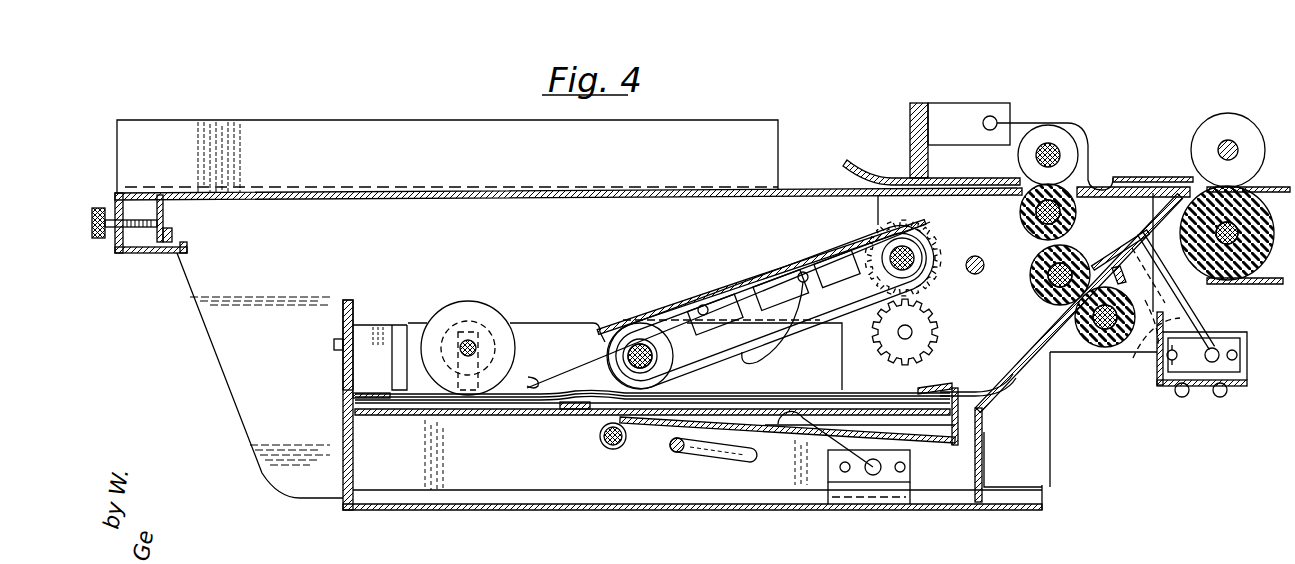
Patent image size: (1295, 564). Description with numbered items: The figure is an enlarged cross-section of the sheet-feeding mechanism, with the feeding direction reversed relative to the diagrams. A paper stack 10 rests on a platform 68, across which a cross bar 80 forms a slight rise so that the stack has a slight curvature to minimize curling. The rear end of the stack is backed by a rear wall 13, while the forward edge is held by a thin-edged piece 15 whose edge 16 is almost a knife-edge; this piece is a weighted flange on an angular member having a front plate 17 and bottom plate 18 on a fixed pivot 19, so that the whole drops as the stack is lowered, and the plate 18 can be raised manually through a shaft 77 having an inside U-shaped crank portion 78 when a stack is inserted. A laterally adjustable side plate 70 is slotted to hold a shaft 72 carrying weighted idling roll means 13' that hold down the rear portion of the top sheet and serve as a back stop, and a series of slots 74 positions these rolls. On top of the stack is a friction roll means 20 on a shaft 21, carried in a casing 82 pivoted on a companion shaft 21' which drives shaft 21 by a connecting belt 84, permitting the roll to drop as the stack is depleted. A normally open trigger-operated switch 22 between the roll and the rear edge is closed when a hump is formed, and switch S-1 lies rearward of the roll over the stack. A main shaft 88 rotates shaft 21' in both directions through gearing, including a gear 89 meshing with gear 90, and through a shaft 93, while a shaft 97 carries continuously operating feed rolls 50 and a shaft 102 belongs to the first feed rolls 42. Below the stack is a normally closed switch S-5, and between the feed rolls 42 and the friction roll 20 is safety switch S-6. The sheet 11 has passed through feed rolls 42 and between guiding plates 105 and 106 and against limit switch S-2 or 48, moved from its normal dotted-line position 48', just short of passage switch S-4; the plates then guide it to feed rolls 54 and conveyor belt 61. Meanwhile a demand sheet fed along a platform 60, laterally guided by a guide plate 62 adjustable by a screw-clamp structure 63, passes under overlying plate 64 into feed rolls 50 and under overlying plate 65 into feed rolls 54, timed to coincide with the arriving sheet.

The paper stack 10 is at (768, 396).
The sheet 11 is at (978, 384).
The rear wall 13 is at (321, 405).
The weighted idling roll means 13' is at (483, 340).
The thin-edged piece 15 is at (940, 387).
The edge 16 is at (920, 390).
The front plate 17 is at (952, 425).
The bottom plate 18 is at (946, 445).
The fixed pivot 19 is at (610, 448).
The friction roll means 20 is at (633, 337).
The shaft 21 is at (665, 353).
The companion shaft 21' is at (925, 249).
The trigger-operated switch 22 is at (529, 367).
The feed rolls 42 is at (1045, 300).
The limit switch 48 is at (1214, 295).
The normal dotted line position 48' is at (1142, 350).
The continuously operating feed rolls 50 is at (1048, 135).
The feed rolls 54 is at (1228, 118).
The platform 60 is at (274, 192).
The belt conveyor 61 is at (1262, 187).
The guide plate 62 is at (362, 125).
The screw-clamp structure 63 is at (113, 247).
The overlying plate 64 is at (957, 174).
The overlying plate 65 is at (1132, 177).
The platform 68 is at (487, 418).
The side plate 70 is at (549, 324).
The shaft 72 is at (466, 342).
The slots 74 is at (396, 327).
The shaft 77 is at (673, 452).
The U-shaped crank portion 78 is at (746, 458).
The cross bar 80 is at (572, 410).
The casing 82 is at (676, 302).
The connecting belt 84 is at (741, 295).
The main shaft 88 is at (913, 333).
The gear 89 is at (938, 320).
The gear 90 is at (878, 219).
The shaft 93 is at (973, 275).
The shaft 97 is at (1034, 216).
The shaft 102 is at (1093, 340).
The guiding plate 105 is at (1092, 266).
The guiding plate 106 is at (1136, 282).
The switch S-1 is at (562, 378).
The limit switch S-2 is at (1183, 290).
The passage switch S-4 is at (1195, 317).
The normally closed switch S-5 is at (832, 427).
The safety switch S-6 is at (780, 345).